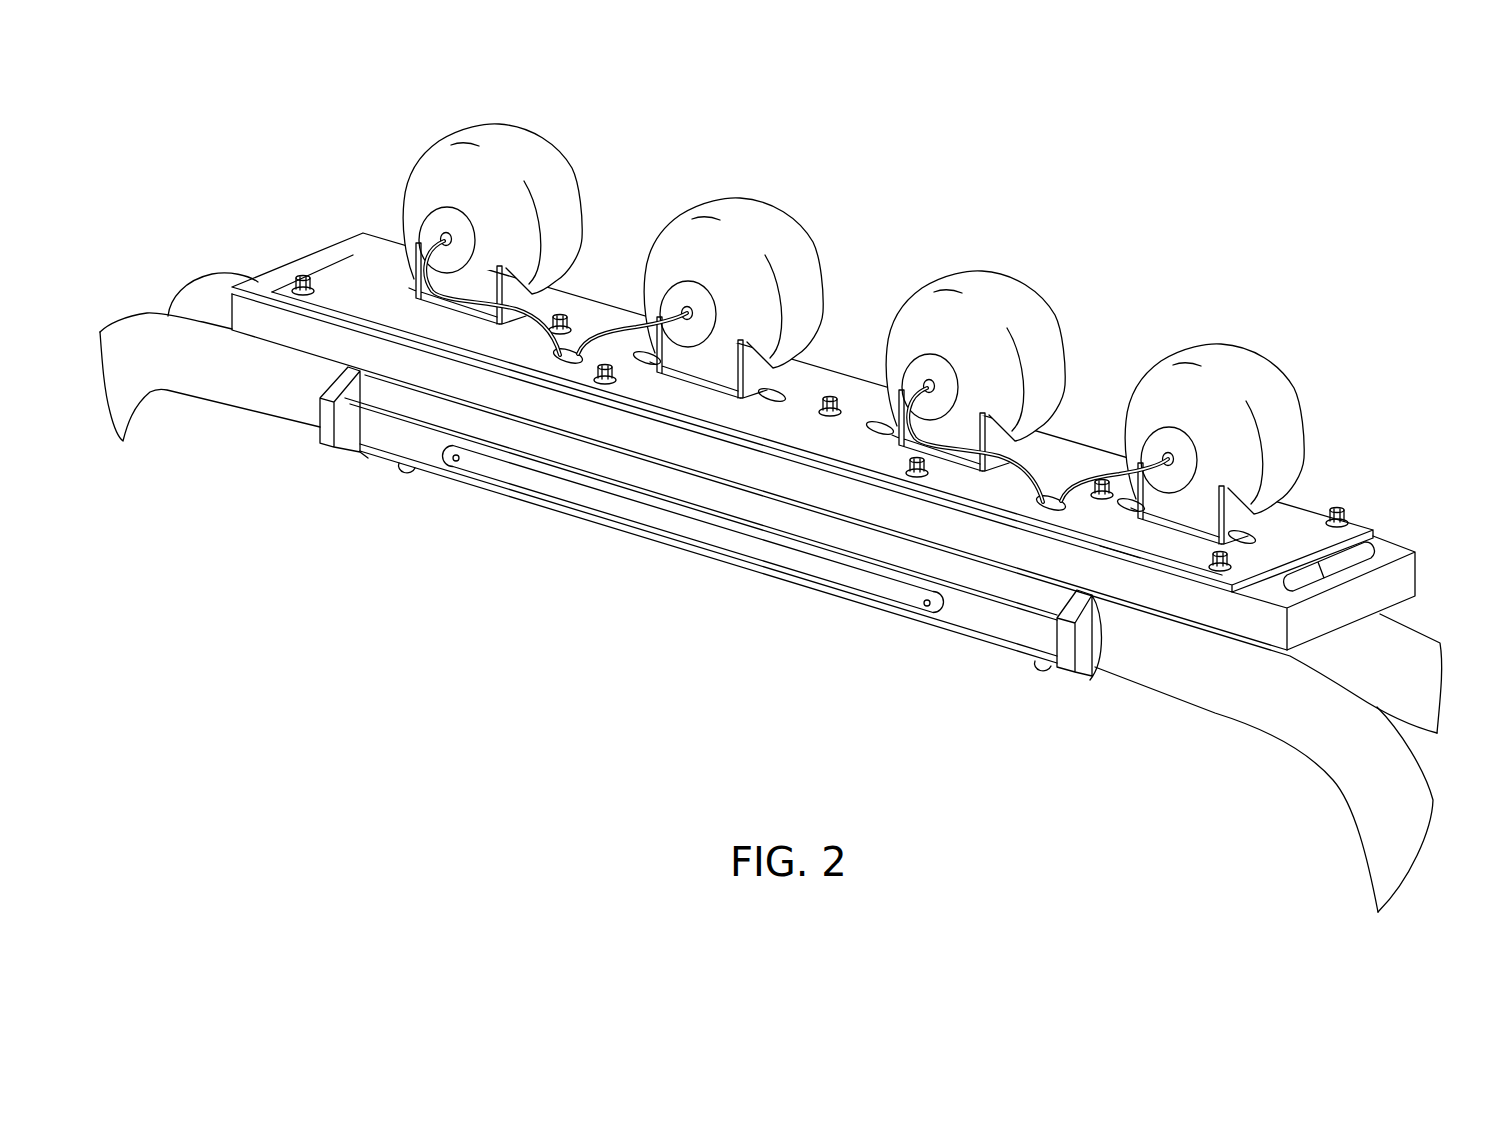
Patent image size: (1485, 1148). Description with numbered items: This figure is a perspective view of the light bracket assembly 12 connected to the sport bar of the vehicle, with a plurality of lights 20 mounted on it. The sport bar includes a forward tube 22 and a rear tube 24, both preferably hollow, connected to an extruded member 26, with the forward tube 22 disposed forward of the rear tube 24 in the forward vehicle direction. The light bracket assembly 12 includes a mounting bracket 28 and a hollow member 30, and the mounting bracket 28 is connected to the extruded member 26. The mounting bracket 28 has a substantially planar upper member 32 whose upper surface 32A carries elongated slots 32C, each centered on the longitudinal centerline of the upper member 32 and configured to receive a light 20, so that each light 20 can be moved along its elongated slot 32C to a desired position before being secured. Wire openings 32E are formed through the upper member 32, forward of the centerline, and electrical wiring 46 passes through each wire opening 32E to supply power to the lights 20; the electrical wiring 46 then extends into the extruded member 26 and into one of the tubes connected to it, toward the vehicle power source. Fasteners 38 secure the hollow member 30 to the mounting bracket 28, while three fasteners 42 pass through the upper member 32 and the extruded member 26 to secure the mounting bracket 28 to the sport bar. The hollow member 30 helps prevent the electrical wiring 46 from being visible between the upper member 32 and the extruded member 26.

The light bracket assembly 12 is at (786, 500).
The light 20 is at (535, 132).
The forward tube 22 is at (205, 280).
The rear tube 24 is at (125, 327).
The extruded member 26 is at (648, 540).
The mounting bracket 28 is at (1089, 440).
The hollow member 30 is at (1387, 531).
The upper member 32 is at (1317, 508).
The upper surface 32A is at (345, 284).
The elongated slot 32C is at (877, 426).
The wire opening 32E is at (1120, 556).
The fastener 38 is at (605, 374).
The fastener 42 is at (831, 405).
The electrical wiring 46 is at (527, 331).